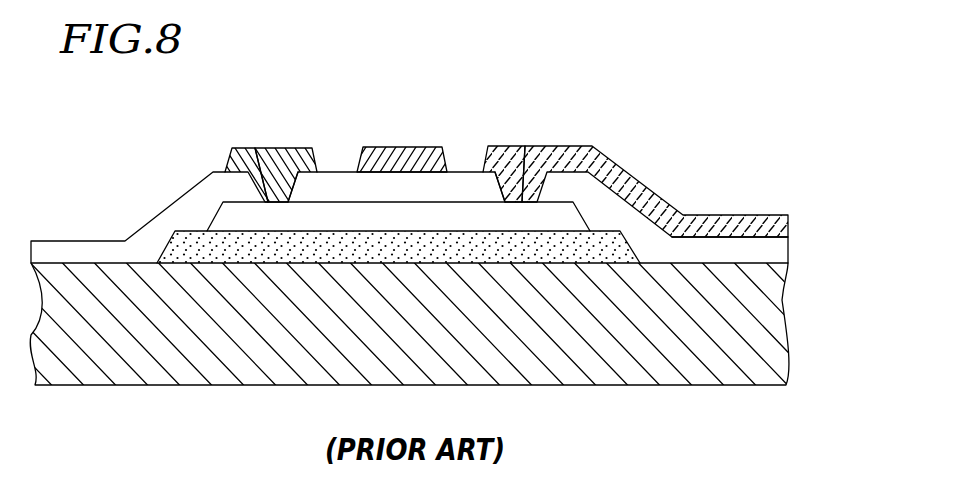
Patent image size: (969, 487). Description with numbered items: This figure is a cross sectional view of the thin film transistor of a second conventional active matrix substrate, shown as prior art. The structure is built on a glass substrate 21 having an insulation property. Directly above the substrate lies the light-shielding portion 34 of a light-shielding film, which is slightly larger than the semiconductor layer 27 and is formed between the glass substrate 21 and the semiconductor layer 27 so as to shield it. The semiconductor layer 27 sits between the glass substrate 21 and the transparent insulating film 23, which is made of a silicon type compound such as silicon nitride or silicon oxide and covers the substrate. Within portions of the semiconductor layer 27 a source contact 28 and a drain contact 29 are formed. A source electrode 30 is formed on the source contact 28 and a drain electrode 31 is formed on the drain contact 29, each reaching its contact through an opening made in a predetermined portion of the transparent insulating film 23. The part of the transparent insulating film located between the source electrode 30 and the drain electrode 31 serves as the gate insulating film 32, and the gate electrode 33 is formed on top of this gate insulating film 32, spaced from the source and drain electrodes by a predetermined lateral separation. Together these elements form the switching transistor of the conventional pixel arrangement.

The glass substrate 21 is at (770, 323).
The transparent insulating film 23 is at (100, 248).
The semiconductor layer 27 is at (338, 208).
The source contact 28 is at (252, 149).
The drain contact 29 is at (520, 147).
The source electrode 30 is at (277, 148).
The drain electrode 31 is at (500, 147).
The gate insulating film 32 is at (457, 183).
The gate electrode 33 is at (400, 147).
The light-shielding portion 34 is at (605, 248).